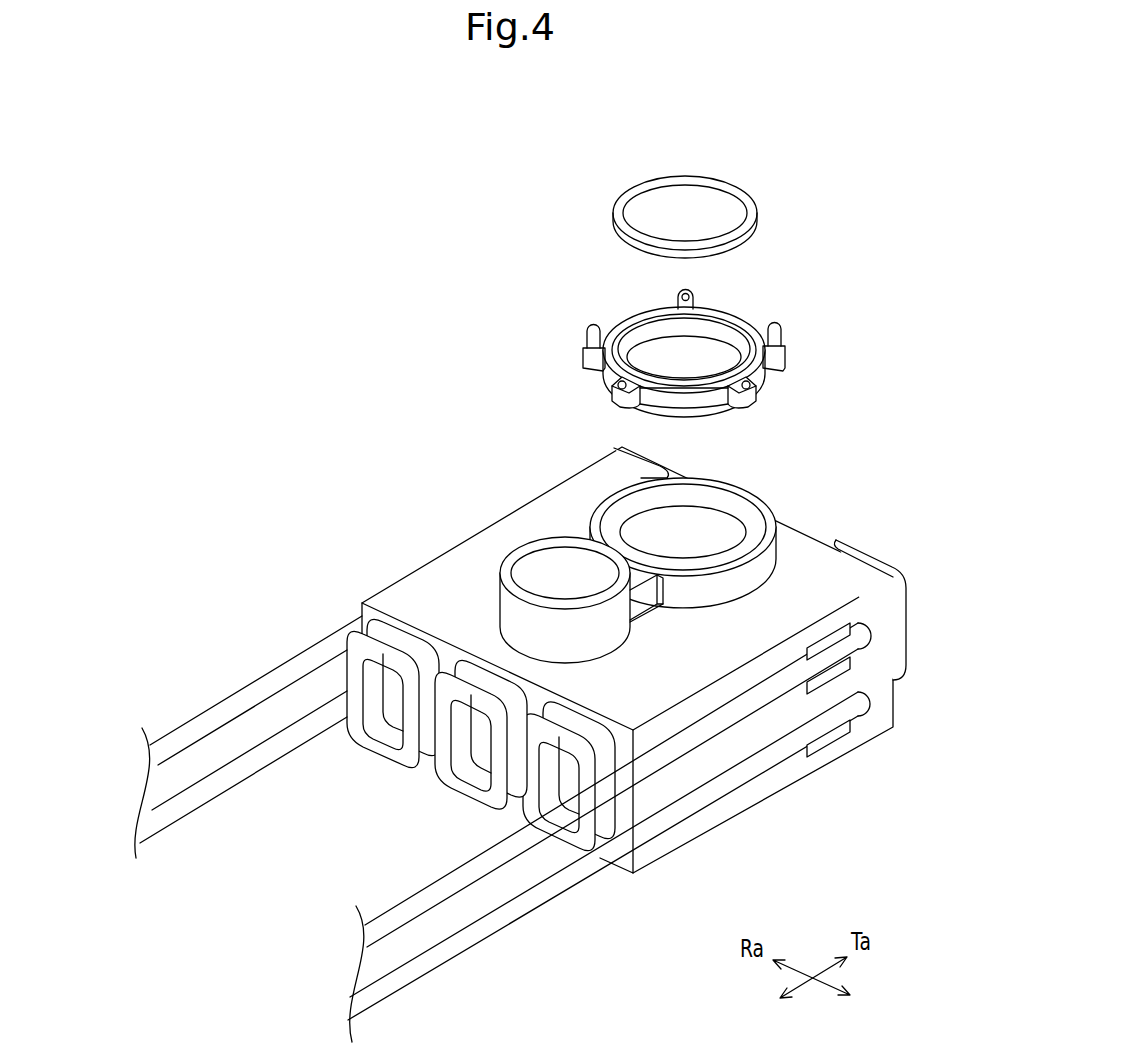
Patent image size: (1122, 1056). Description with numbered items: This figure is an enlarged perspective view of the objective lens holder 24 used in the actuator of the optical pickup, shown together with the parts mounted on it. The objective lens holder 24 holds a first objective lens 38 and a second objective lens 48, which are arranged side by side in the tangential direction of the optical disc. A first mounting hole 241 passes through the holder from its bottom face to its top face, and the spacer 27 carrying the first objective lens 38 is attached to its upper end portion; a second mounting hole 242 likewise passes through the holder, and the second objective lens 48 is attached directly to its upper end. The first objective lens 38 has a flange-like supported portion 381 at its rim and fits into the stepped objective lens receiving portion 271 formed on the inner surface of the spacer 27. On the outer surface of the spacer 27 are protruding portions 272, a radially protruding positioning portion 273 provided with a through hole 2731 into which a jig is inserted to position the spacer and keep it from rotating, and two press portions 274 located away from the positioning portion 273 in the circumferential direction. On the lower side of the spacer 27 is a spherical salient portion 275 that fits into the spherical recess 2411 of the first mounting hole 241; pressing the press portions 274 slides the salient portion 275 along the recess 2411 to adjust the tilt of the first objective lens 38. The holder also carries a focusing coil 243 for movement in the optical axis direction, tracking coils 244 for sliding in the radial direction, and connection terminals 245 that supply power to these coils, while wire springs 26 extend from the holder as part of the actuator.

The objective lens holder 24 is at (383, 590).
The first mounting hole 241 is at (627, 523).
The recess 2411 is at (740, 510).
The second mounting hole 242 is at (533, 547).
The focusing coil 243 is at (787, 522).
The tracking coil 244 is at (664, 466).
The connection terminals 245 is at (848, 663).
The wire springs 26 is at (287, 740).
The spacer 27 is at (750, 327).
The objective lens receiving portion 271 is at (637, 335).
The protruding portions 272 is at (587, 335).
The positioning portion 273 is at (696, 294).
The through hole 2731 is at (680, 292).
The press portions 274 is at (620, 393).
The salient portion 275 is at (713, 417).
The first objective lens 38 is at (687, 177).
The supported portion 381 is at (757, 207).
The second objective lens 48 is at (537, 570).